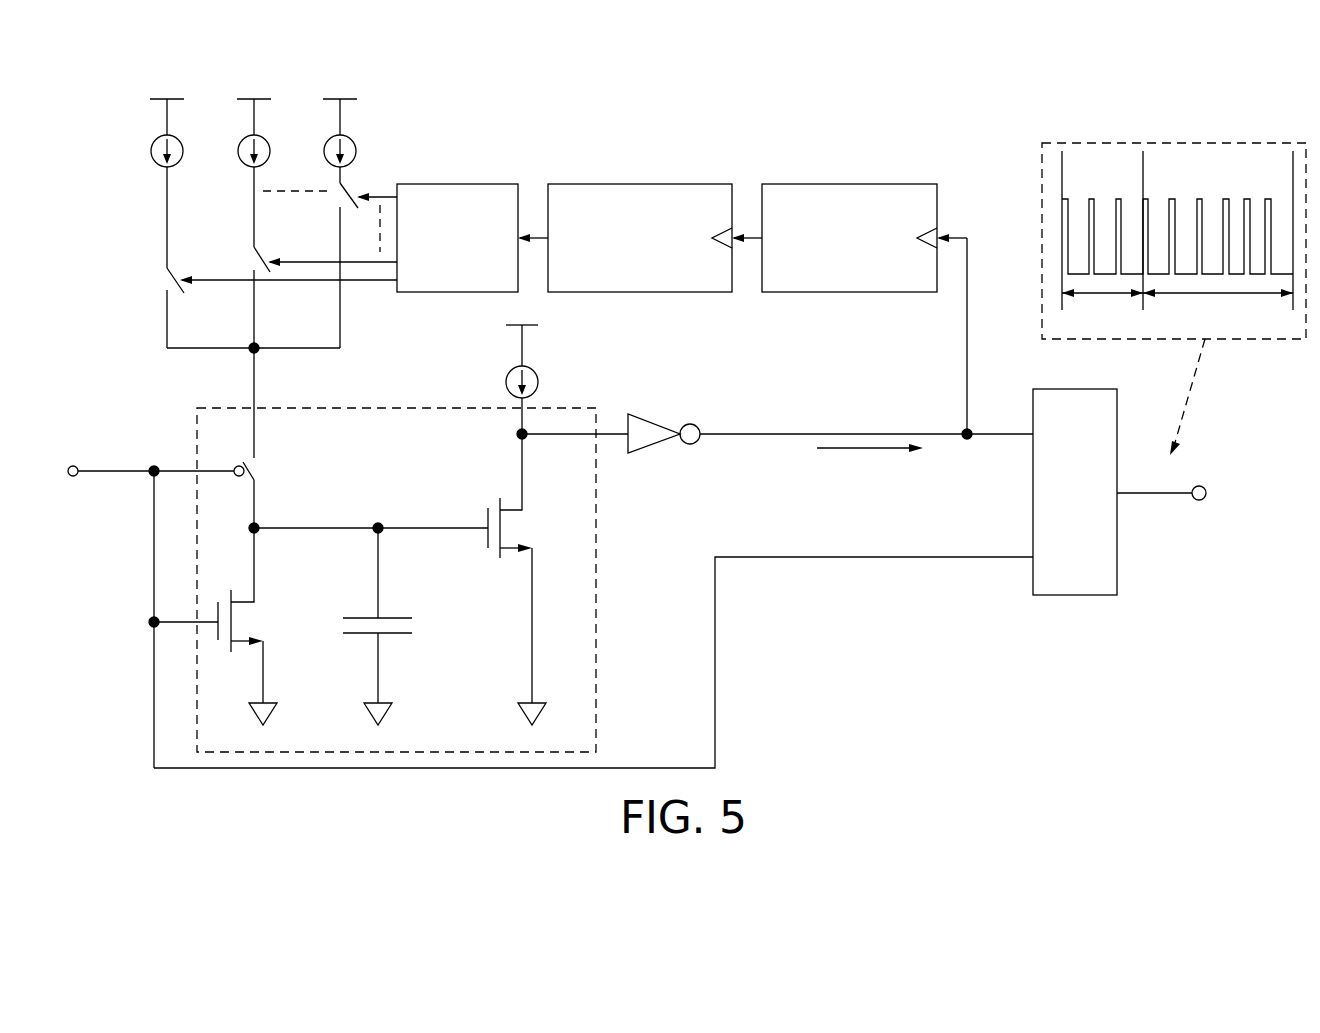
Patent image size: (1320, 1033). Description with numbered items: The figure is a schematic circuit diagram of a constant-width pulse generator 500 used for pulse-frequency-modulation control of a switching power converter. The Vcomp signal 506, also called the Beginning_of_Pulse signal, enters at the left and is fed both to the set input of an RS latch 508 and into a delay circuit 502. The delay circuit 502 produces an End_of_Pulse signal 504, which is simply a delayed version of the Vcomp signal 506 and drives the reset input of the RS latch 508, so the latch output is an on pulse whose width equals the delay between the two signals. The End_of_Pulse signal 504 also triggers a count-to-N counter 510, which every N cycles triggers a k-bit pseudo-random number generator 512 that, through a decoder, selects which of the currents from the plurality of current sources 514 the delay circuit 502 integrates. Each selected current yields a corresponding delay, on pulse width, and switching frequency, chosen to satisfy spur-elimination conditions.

The constant-width pulse generator 500 is at (914, 103).
The delay circuit 502 is at (377, 407).
The End_of_Pulse signal 504 is at (850, 450).
The Vcomp signal 506 is at (116, 434).
The RS latch 508 is at (1117, 555).
The count-to-N counter 510 is at (837, 184).
The k-bit pseudo-random number generator 512 is at (623, 184).
The plurality of current sources 514 is at (362, 116).